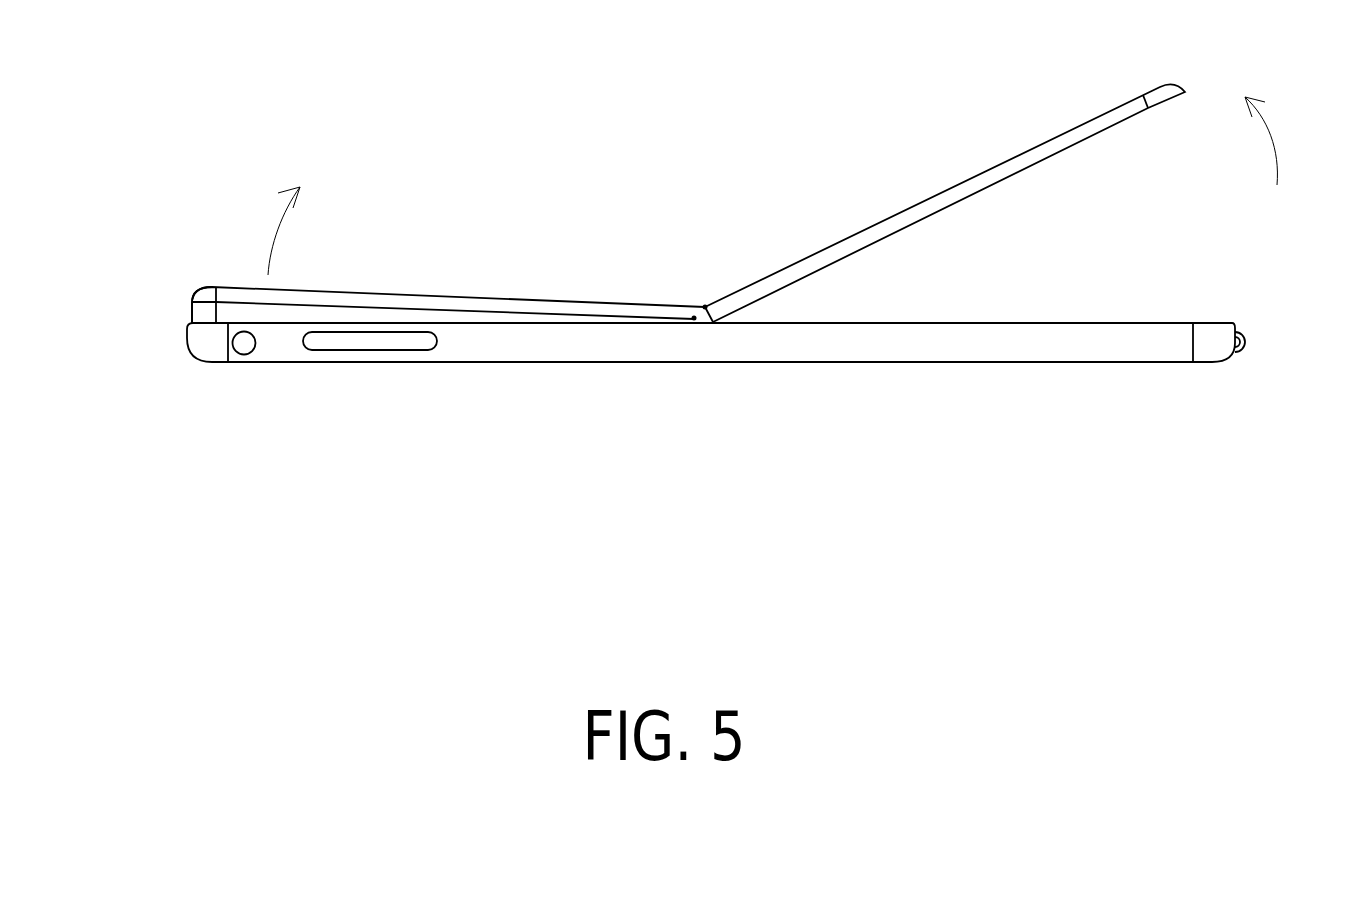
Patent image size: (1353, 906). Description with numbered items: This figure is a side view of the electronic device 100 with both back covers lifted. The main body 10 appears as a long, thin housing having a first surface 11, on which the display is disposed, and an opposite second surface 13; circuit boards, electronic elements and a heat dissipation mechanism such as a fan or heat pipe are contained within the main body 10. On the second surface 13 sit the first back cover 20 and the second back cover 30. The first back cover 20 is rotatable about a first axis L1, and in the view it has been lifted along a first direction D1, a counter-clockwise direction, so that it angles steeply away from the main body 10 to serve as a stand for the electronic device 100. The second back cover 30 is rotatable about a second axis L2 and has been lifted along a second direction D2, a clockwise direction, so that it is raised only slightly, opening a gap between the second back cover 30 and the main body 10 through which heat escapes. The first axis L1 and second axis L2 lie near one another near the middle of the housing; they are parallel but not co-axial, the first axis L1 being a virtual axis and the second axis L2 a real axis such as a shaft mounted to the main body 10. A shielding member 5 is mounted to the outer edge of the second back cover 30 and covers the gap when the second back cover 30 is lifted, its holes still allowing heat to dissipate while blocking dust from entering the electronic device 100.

The electronic device 100 is at (166, 135).
The shielding member 5 is at (186, 310).
The main body 10 is at (735, 345).
The first surface 11 is at (1108, 362).
The second surface 13 is at (1160, 320).
The first back cover 20 is at (918, 217).
The second back cover 30 is at (485, 303).
The first axis L1 is at (705, 305).
The second axis L2 is at (694, 316).
The first direction D1 is at (1284, 141).
The second direction D2 is at (261, 231).